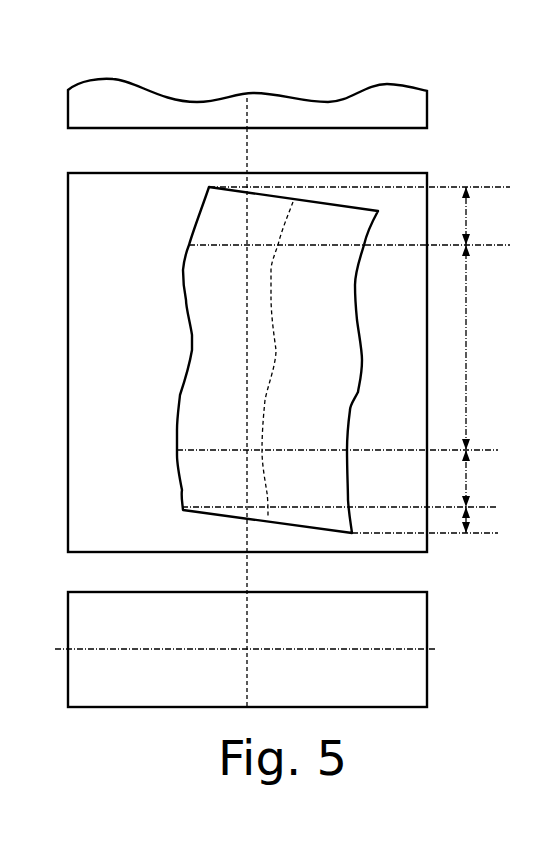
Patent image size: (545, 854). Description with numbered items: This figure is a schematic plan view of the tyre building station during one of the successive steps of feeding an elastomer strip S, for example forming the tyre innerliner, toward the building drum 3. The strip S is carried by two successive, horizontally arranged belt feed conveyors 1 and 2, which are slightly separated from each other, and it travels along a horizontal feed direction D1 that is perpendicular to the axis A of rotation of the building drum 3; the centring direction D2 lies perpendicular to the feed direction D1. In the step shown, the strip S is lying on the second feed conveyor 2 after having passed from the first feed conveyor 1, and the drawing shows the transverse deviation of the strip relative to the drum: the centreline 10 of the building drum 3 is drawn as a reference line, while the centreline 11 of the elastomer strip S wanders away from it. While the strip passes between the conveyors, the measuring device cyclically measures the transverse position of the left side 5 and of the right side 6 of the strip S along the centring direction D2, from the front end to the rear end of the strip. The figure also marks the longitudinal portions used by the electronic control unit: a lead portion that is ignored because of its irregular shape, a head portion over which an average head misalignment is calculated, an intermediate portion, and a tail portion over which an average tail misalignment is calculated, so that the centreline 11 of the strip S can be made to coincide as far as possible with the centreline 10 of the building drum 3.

The feed conveyor 1 is at (408, 110).
The feed conveyor 2 is at (85, 428).
The building drum 3 is at (85, 616).
The left side 5 is at (176, 432).
The right side 6 is at (350, 412).
The centreline 10 is at (248, 110).
The centreline 11 is at (271, 297).
The elastomer strip S is at (208, 329).
The axis A is at (117, 649).
The feed direction D1 is at (48, 58).
The centring direction D2 is at (48, 58).